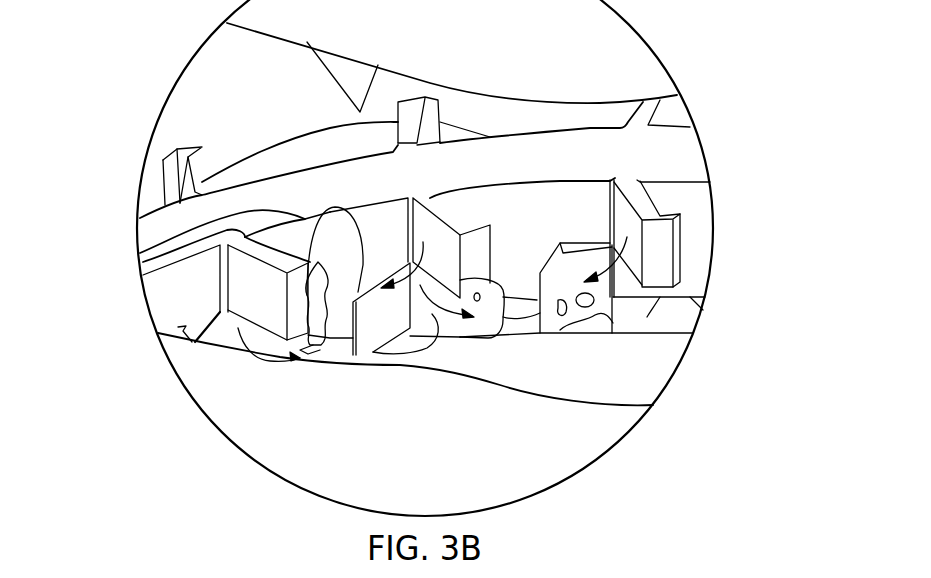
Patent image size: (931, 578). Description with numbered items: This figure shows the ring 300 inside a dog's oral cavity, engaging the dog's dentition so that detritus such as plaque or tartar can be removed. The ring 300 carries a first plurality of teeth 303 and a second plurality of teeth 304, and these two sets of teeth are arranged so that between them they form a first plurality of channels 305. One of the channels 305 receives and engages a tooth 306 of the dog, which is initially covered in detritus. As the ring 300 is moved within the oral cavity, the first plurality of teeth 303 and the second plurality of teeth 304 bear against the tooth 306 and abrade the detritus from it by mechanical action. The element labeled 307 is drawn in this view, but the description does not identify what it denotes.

The ring 300 is at (538, 152).
The first plurality of teeth 303 is at (644, 200).
The second plurality of teeth 304 is at (640, 316).
The first plurality of channels 305 is at (340, 360).
The tooth 306 is at (140, 253).
The wavy blank 307 is at (318, 358).